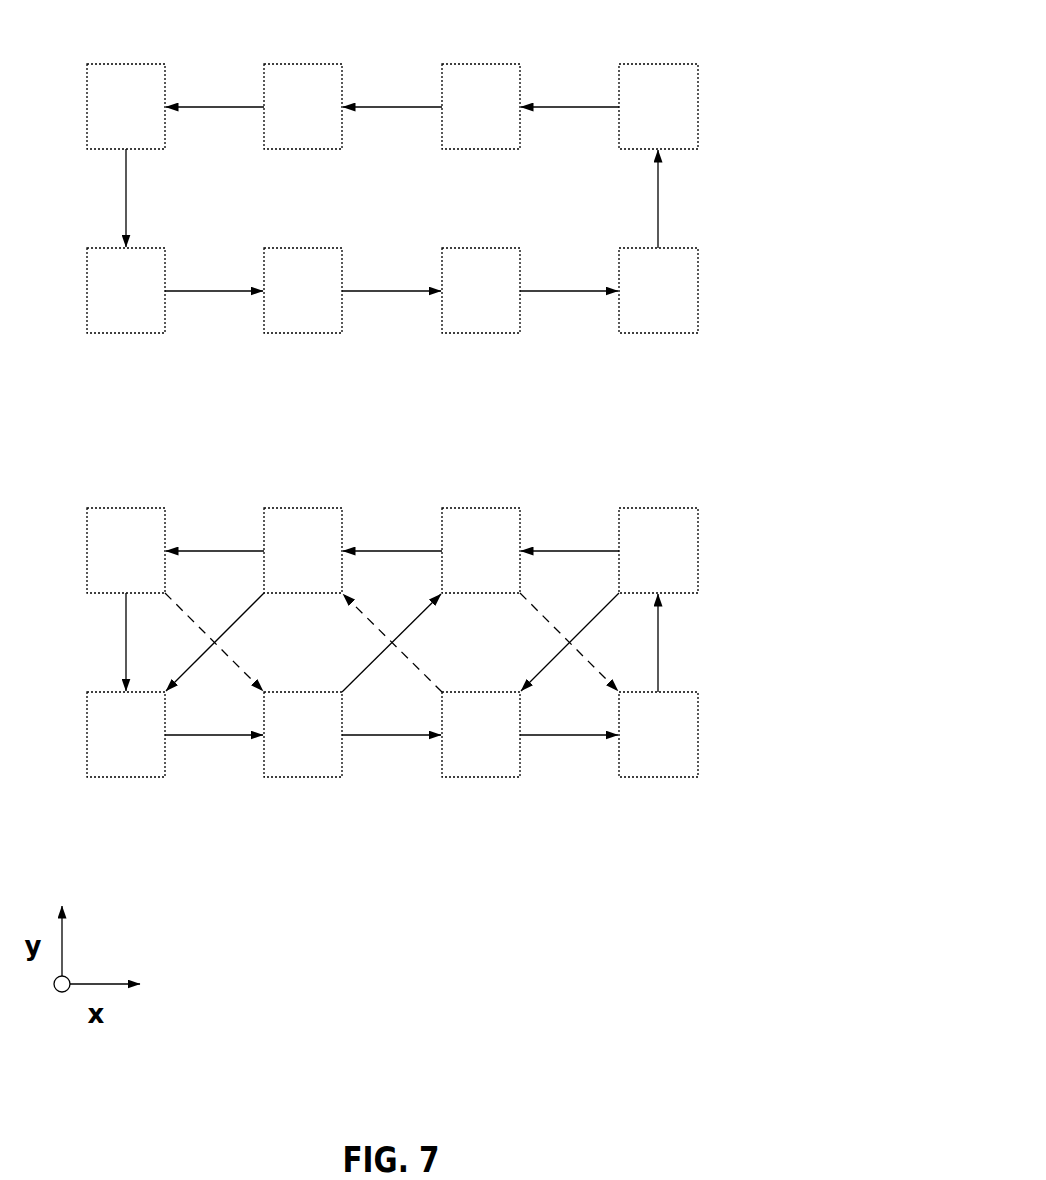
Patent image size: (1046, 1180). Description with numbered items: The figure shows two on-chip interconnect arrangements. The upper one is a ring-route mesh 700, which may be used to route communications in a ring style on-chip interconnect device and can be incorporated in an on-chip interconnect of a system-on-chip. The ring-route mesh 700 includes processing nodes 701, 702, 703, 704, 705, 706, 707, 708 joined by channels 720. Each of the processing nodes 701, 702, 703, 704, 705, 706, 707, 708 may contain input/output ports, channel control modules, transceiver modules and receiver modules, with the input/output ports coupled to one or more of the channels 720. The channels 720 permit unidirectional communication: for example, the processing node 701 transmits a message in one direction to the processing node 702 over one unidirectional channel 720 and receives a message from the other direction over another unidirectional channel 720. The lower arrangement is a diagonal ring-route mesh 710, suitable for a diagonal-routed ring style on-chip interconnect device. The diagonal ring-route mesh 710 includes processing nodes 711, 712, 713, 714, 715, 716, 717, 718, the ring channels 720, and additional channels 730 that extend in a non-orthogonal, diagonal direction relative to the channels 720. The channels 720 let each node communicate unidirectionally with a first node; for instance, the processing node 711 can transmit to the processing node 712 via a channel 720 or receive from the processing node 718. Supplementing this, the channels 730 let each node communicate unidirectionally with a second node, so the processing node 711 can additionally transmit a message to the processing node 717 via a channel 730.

The ring-route mesh 700 is at (747, 46).
The processing node 701 is at (658, 106).
The processing node 702 is at (481, 106).
The processing node 703 is at (303, 106).
The processing node 704 is at (126, 106).
The processing node 705 is at (126, 290).
The processing node 706 is at (303, 290).
The processing node 707 is at (481, 290).
The processing node 708 is at (658, 290).
The diagonal ring-route mesh 710 is at (747, 509).
The processing node 711 is at (658, 550).
The processing node 712 is at (481, 550).
The processing node 713 is at (303, 550).
The processing node 714 is at (126, 550).
The processing node 715 is at (126, 734).
The processing node 716 is at (303, 734).
The processing node 717 is at (481, 734).
The processing node 718 is at (658, 734).
The channel 720 is at (659, 228).
The channel 730 is at (355, 602).